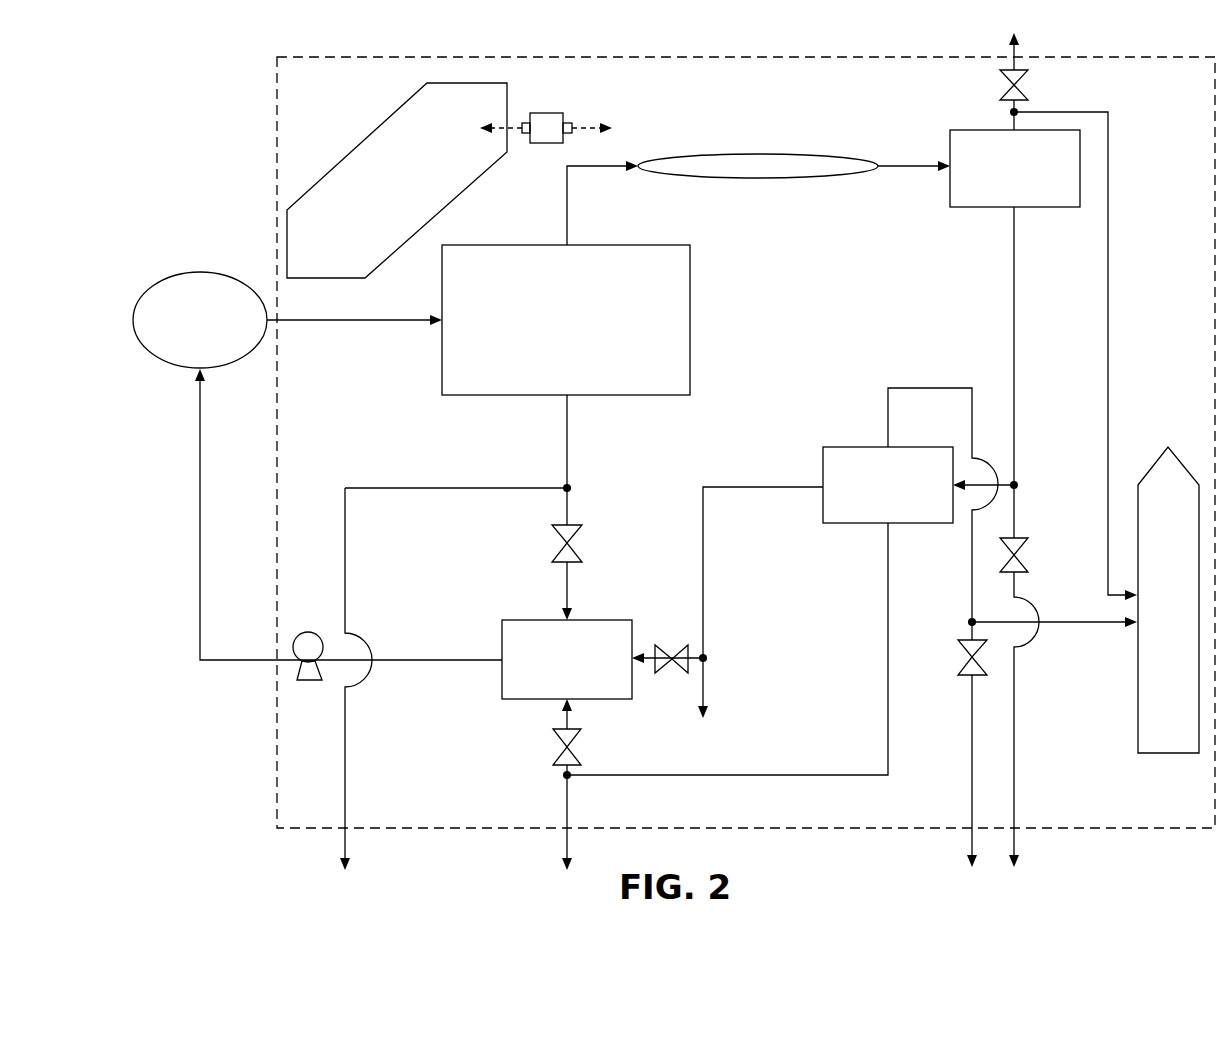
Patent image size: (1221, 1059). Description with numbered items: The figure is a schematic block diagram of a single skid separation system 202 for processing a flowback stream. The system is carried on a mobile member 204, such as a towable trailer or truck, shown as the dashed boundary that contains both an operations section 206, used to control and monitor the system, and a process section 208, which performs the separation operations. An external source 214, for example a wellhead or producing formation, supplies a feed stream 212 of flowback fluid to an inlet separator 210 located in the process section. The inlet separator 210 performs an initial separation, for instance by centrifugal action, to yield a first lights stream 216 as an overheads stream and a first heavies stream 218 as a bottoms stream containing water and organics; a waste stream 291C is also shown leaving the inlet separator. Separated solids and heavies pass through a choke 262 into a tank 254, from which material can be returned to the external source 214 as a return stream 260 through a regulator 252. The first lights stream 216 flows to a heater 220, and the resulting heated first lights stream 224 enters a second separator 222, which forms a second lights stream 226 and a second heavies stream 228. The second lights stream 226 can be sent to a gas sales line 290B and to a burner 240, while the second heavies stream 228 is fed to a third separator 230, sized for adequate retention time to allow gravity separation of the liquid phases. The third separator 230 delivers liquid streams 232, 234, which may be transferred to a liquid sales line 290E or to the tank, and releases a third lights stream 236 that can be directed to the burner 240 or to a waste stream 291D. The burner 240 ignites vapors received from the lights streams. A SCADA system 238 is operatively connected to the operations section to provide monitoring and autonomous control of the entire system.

The single skid separation system 202 is at (232, 117).
The mobile member 204 is at (277, 763).
The operations section 206 is at (386, 184).
The process section 208 is at (913, 804).
The inlet separator 210 is at (532, 245).
The feed stream 212 is at (388, 322).
The external source 214 is at (200, 273).
The first lights stream 216 is at (567, 220).
The first heavies stream 218 is at (565, 460).
The heater 220 is at (758, 153).
The second separator 222 is at (973, 210).
The heated first lights stream 224 is at (915, 170).
The second lights stream 226 is at (1013, 120).
The second heavies stream 228 is at (1013, 310).
The third separator 230 is at (850, 447).
The liquid stream 232 is at (887, 627).
The liquid stream 234 is at (740, 485).
The third lights stream 236 is at (920, 387).
The SCADA system 238 is at (547, 113).
The burner 240 is at (1137, 680).
The regulator 252 is at (308, 632).
The tank 254 is at (533, 620).
The return stream 260 is at (198, 538).
The choke 262 is at (562, 543).
The gas sales line 290B is at (1013, 52).
The liquid sales line 290E is at (568, 812).
The waste stream 291C is at (347, 812).
The waste stream 291D is at (1219, 440).